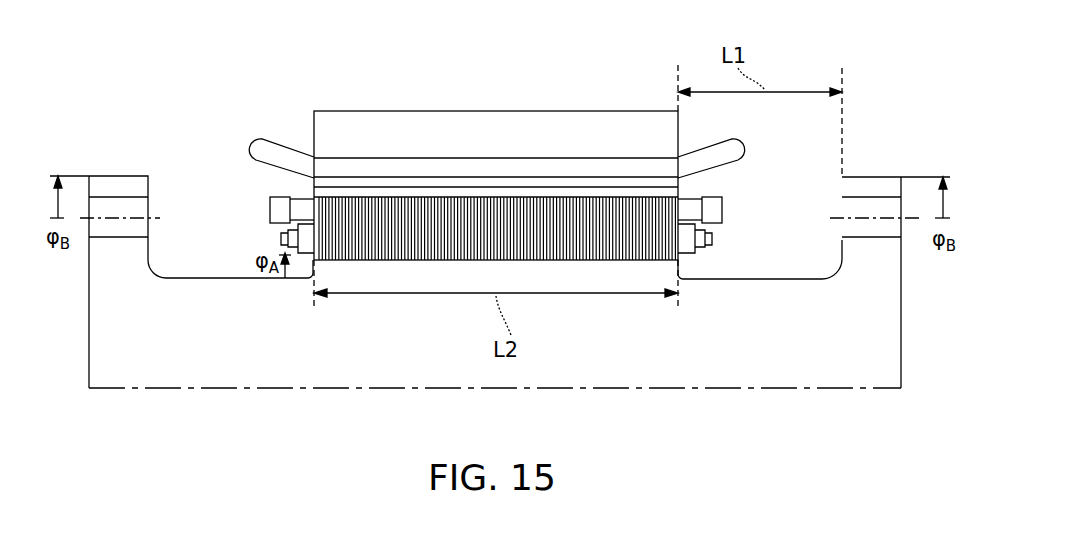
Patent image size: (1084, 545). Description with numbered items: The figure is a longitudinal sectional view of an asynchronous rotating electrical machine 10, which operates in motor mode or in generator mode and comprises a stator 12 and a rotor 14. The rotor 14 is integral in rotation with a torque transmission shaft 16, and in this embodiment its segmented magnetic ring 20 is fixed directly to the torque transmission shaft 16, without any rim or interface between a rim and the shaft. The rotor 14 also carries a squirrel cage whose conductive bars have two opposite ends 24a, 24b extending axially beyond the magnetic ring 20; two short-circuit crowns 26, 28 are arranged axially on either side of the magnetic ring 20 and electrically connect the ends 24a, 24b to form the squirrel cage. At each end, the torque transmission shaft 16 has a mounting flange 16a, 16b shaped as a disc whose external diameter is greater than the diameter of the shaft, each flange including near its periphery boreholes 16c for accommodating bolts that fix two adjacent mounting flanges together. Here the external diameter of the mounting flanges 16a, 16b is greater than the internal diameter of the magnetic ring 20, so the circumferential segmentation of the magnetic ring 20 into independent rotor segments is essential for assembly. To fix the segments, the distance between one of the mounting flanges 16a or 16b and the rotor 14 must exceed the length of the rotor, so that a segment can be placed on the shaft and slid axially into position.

The asynchronous rotating electrical machine 10 is at (849, 143).
The stator 12 is at (664, 125).
The rotor 14 is at (698, 263).
The torque transmission shaft 16 is at (503, 304).
The mounting flange 16a is at (102, 358).
The mounting flange 16b is at (880, 358).
The boreholes 16c is at (100, 232).
The magnetic ring 20 is at (518, 190).
The end of conductive element 24a is at (300, 205).
The end of conductive element 24b is at (692, 208).
The short-circuit crown 26 is at (277, 211).
The short-circuit crown 28 is at (723, 211).